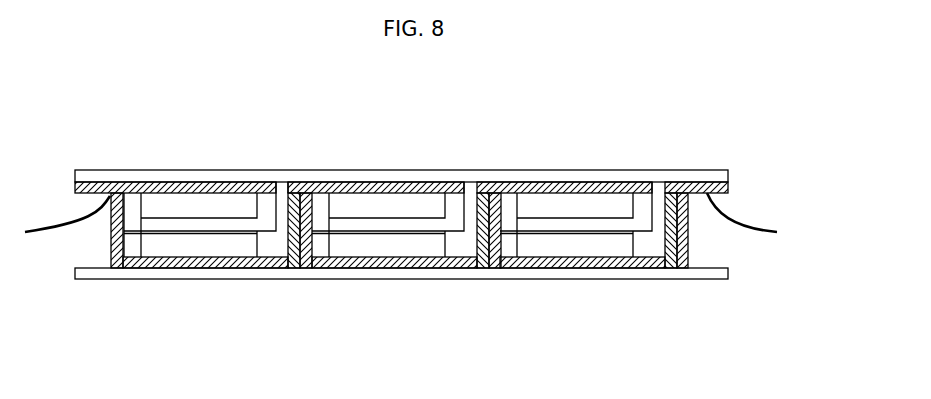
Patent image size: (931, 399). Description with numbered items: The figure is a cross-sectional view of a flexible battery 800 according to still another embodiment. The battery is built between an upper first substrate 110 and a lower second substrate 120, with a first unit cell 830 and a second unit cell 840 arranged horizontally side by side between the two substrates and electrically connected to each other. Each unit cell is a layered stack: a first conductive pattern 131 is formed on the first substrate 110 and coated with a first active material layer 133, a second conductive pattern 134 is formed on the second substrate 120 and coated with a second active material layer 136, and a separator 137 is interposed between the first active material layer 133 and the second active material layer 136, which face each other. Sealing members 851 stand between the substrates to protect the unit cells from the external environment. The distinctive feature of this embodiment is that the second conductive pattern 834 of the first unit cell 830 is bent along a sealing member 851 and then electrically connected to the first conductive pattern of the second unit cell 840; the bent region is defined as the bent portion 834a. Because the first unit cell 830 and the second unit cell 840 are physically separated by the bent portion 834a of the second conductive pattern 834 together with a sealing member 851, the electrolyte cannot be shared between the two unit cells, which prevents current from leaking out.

The flexible battery 800 is at (750, 118).
The first substrate 110 is at (728, 175).
The second substrate 120 is at (728, 274).
The first conductive pattern 131 is at (114, 204).
The first active material layer 133 is at (170, 202).
The second conductive pattern 134 is at (141, 254).
The second active material layer 136 is at (203, 240).
The separator 137 is at (242, 222).
The second conductive pattern 834 is at (263, 253).
The bent portion 834a is at (293, 192).
The sealing member 851 is at (113, 238).
The first unit cell 830 is at (287, 284).
The second unit cell 840 is at (477, 284).